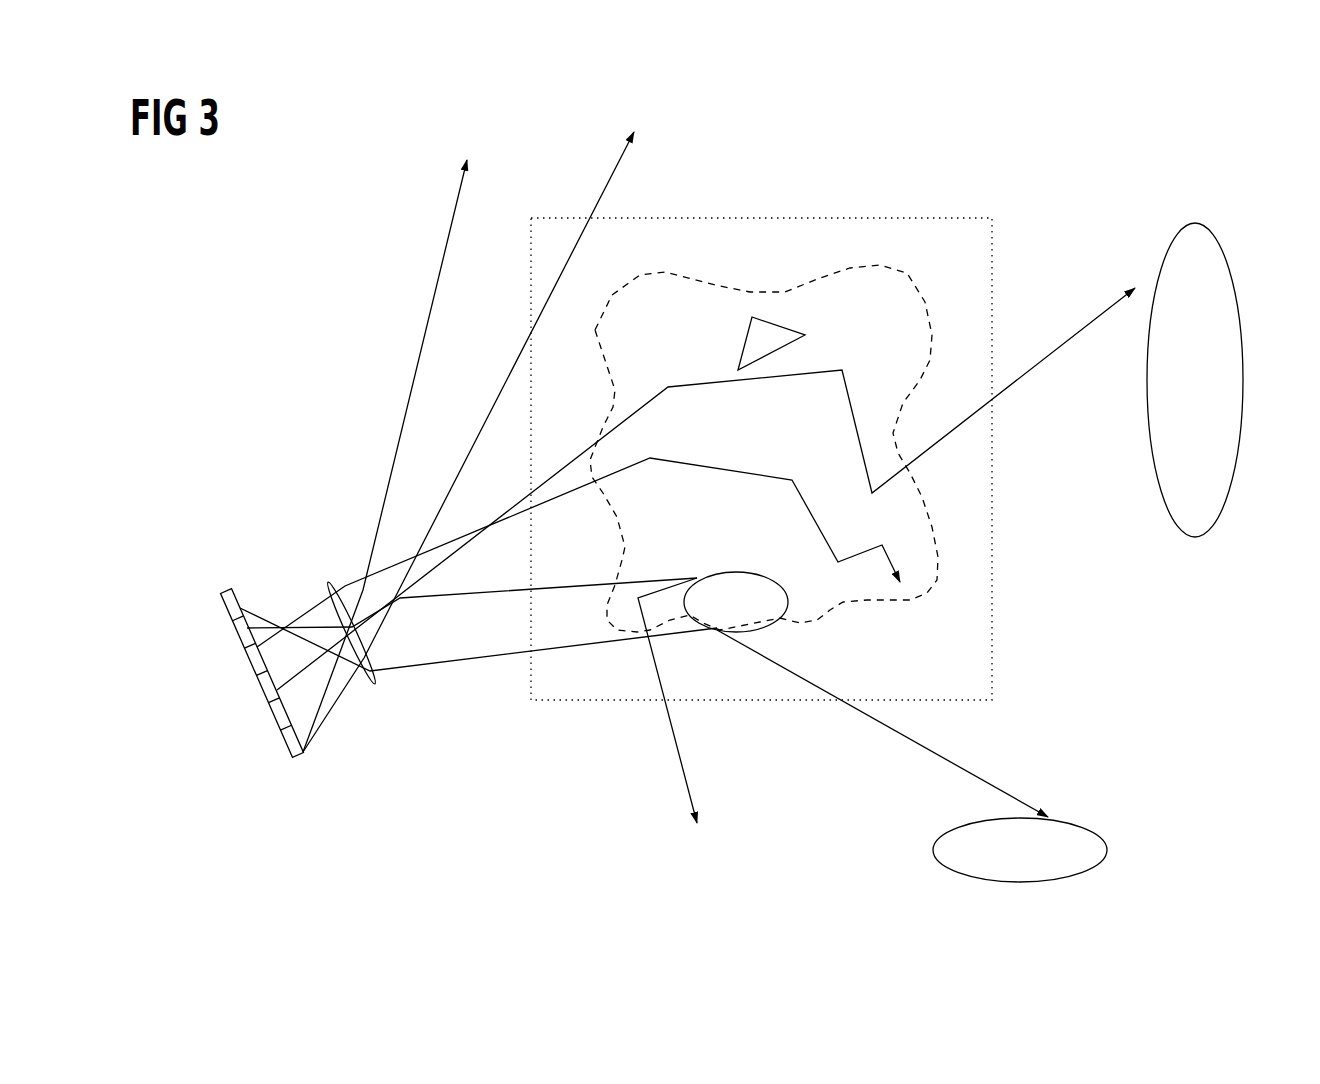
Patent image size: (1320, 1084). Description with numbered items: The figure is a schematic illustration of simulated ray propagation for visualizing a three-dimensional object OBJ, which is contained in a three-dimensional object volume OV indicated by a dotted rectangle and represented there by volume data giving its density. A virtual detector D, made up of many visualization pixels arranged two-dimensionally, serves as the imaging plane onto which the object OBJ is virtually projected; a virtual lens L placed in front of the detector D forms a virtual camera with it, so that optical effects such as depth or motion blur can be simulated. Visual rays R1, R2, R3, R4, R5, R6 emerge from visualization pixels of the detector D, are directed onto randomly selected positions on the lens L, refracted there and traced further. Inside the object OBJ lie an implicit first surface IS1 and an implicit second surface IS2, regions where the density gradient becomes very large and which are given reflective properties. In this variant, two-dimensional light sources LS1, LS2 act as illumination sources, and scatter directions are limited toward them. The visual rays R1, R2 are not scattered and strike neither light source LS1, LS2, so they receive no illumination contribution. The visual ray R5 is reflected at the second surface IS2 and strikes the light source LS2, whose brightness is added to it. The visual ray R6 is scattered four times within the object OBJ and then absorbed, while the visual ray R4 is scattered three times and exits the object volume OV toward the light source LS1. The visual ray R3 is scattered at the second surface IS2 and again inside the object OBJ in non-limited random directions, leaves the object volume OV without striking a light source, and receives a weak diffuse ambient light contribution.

The virtual detector D is at (224, 590).
The virtual lens L is at (374, 688).
The visual ray R1 is at (424, 334).
The visual ray R2 is at (614, 178).
The visual ray R3 is at (683, 759).
The visual ray R4 is at (1037, 363).
The visual ray R5 is at (915, 742).
The visual ray R6 is at (735, 470).
The object OBJ is at (892, 603).
The implicit first surface IS1 is at (784, 330).
The implicit second surface IS2 is at (517, 602).
The light source LS1 is at (1195, 380).
The light source LS2 is at (1020, 850).
The object volume OV is at (585, 704).